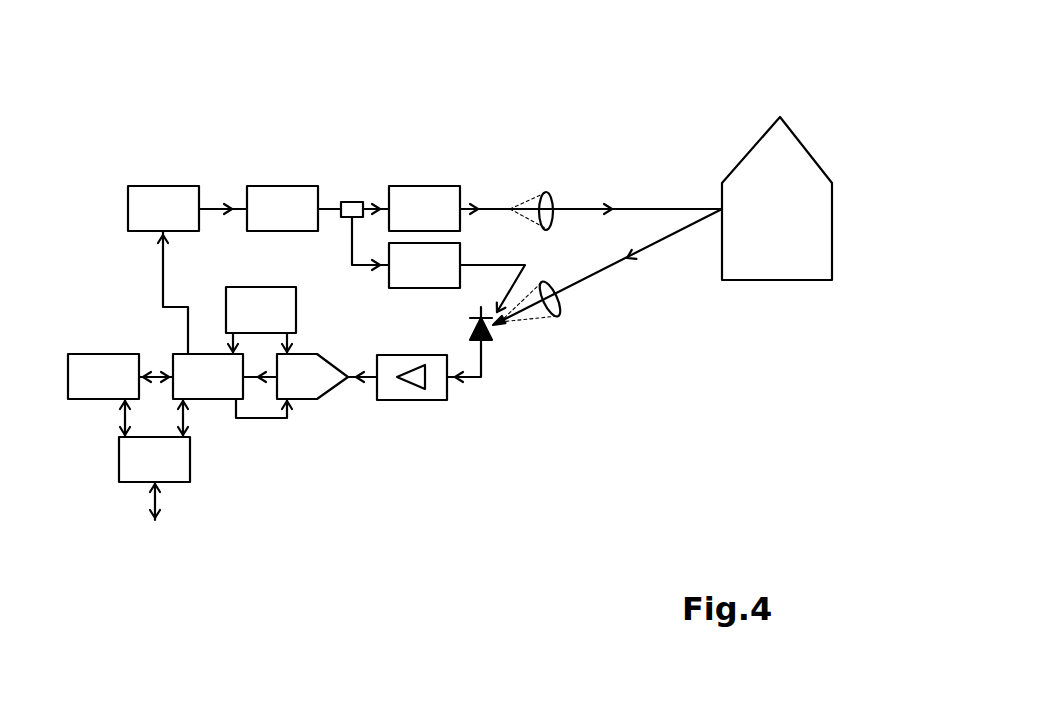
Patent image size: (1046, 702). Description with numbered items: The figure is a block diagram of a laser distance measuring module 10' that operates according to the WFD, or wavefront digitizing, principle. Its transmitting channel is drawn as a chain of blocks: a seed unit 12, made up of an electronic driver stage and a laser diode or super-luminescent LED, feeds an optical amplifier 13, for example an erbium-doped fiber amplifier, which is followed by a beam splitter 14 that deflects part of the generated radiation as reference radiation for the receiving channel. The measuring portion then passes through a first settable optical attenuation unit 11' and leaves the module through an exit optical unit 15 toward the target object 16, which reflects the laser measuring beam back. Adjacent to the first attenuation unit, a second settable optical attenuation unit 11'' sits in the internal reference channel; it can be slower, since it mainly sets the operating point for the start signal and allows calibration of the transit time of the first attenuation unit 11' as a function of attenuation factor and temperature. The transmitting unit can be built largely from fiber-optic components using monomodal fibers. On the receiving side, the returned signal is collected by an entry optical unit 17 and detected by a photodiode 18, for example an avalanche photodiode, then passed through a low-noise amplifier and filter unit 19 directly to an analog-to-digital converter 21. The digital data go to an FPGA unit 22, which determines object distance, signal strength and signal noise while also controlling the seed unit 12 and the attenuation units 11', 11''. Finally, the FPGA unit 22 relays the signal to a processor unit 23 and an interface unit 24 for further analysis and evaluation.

The distance measuring module 10' is at (106, 74).
The first settable optical attenuation unit 11' is at (544, 120).
The second settable optical attenuation unit 11'' is at (550, 185).
The seed unit 12 is at (232, 125).
The optical amplifier 13 is at (357, 125).
The beam splitter 14 is at (415, 148).
The exit optical unit 15 is at (602, 184).
The target object 16 is at (807, 262).
The entry optical unit 17 is at (606, 336).
The photodiode 18 is at (561, 385).
The low-noise amplifier and filter unit 19 is at (455, 449).
The analog-to-digital converter 21 is at (332, 438).
The FPGA unit 22 is at (255, 407).
The processor unit 23 is at (104, 347).
The interface unit 24 is at (114, 467).